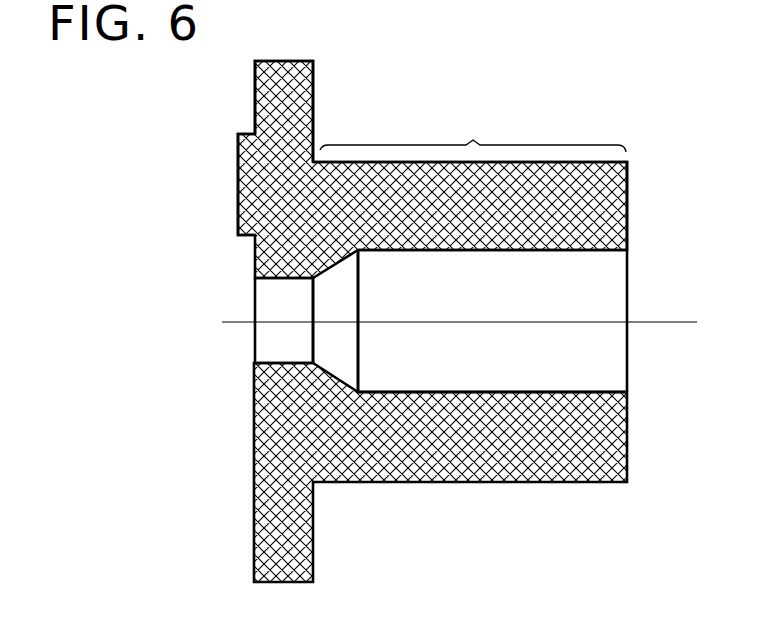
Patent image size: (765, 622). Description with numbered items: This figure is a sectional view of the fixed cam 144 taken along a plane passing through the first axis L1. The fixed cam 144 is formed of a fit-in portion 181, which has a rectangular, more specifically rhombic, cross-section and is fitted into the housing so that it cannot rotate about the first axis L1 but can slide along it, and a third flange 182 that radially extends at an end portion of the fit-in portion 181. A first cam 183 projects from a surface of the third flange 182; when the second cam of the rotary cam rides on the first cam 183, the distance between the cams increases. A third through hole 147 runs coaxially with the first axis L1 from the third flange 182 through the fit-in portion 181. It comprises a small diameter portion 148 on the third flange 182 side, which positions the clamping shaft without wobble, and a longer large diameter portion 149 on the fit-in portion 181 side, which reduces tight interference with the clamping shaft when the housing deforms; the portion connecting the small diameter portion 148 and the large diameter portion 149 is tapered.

The fixed cam 144 is at (506, 482).
The third through hole 147 is at (459, 347).
The small diameter portion 148 is at (272, 362).
The large diameter portion 149 is at (507, 393).
The fit-in portion 181 is at (470, 179).
The third flange 182 is at (281, 61).
The first cam 183 is at (238, 188).
The first axis L1 is at (648, 328).